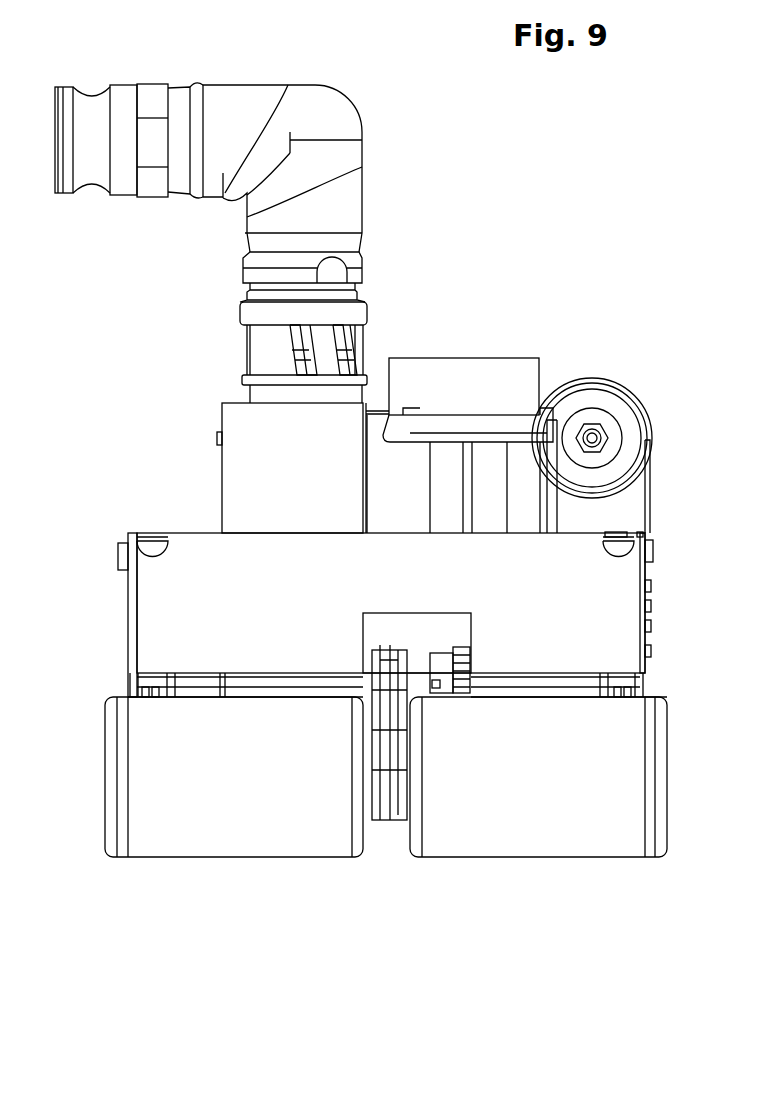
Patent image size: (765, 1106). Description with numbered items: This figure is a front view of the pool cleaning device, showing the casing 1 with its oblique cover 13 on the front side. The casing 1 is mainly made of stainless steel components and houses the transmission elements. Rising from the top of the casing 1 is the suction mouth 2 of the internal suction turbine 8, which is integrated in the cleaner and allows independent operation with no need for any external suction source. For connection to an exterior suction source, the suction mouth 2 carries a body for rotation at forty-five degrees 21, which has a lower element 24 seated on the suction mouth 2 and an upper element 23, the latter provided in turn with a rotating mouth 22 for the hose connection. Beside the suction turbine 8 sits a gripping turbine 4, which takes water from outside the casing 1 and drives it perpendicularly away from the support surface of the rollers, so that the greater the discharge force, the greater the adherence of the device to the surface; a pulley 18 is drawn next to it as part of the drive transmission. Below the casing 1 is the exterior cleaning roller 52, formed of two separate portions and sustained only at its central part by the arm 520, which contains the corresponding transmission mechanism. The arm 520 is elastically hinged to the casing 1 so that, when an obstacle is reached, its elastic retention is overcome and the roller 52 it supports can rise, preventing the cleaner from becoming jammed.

The casing 1 is at (187, 532).
The suction mouth 2 is at (358, 297).
The gripping turbine 4 is at (473, 383).
The suction turbine 8 is at (265, 480).
The oblique cover 13 is at (178, 612).
The pulley 18 is at (610, 388).
The body for rotation at 45° 21 is at (289, 132).
The rotating mouth 22 is at (126, 93).
The upper element 23 is at (287, 90).
The lower element 24 is at (345, 207).
The exterior cleaning roller 52 is at (212, 800).
The hinged arm 520 is at (373, 823).